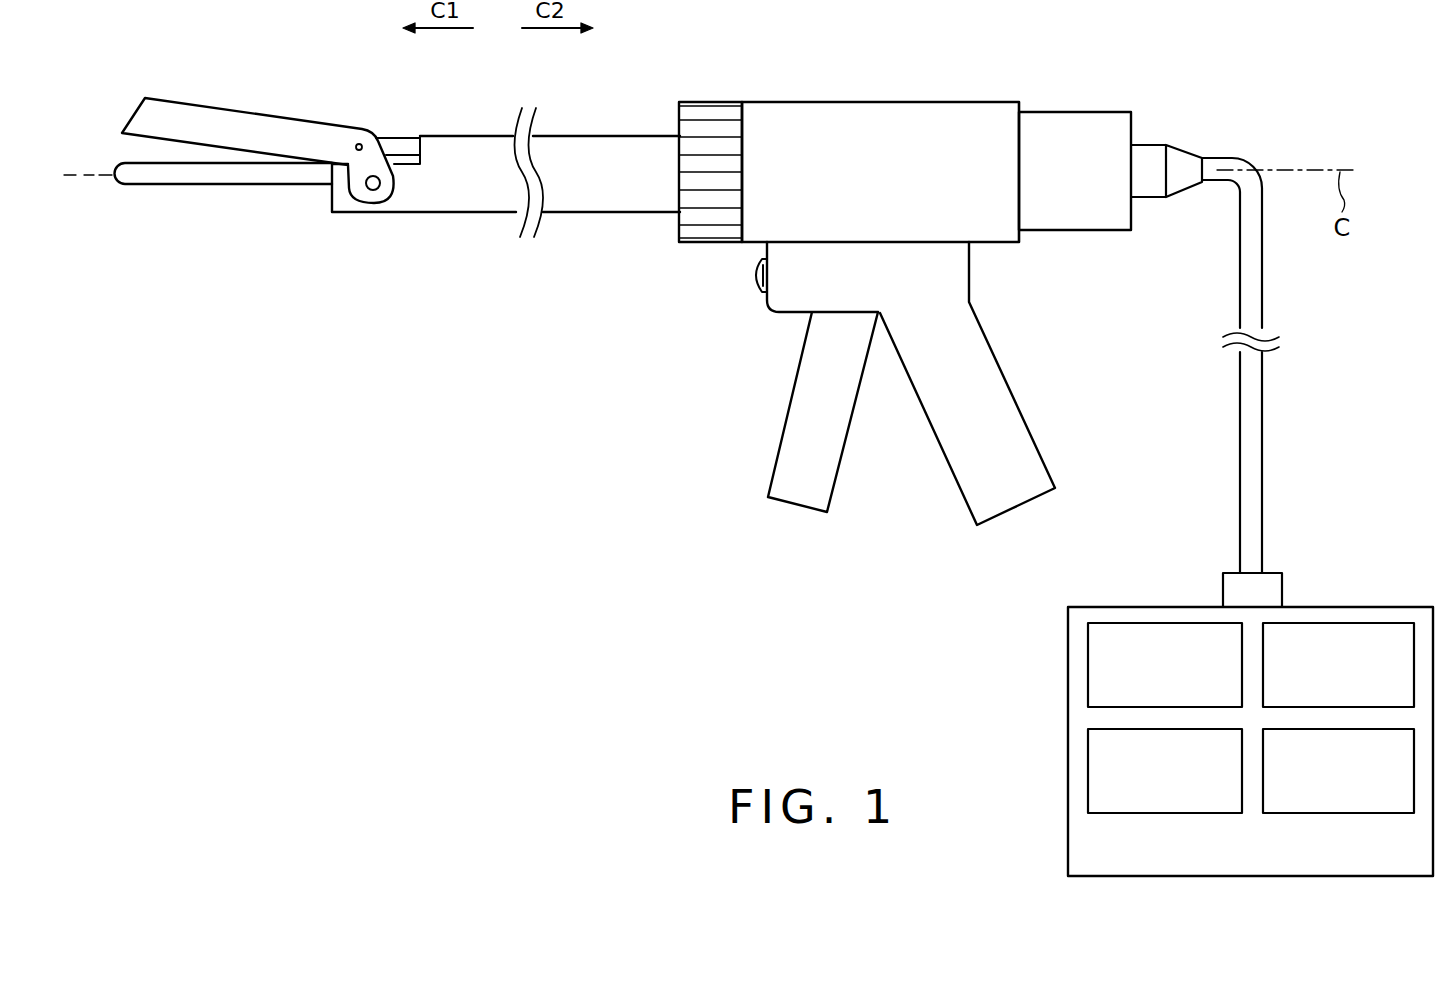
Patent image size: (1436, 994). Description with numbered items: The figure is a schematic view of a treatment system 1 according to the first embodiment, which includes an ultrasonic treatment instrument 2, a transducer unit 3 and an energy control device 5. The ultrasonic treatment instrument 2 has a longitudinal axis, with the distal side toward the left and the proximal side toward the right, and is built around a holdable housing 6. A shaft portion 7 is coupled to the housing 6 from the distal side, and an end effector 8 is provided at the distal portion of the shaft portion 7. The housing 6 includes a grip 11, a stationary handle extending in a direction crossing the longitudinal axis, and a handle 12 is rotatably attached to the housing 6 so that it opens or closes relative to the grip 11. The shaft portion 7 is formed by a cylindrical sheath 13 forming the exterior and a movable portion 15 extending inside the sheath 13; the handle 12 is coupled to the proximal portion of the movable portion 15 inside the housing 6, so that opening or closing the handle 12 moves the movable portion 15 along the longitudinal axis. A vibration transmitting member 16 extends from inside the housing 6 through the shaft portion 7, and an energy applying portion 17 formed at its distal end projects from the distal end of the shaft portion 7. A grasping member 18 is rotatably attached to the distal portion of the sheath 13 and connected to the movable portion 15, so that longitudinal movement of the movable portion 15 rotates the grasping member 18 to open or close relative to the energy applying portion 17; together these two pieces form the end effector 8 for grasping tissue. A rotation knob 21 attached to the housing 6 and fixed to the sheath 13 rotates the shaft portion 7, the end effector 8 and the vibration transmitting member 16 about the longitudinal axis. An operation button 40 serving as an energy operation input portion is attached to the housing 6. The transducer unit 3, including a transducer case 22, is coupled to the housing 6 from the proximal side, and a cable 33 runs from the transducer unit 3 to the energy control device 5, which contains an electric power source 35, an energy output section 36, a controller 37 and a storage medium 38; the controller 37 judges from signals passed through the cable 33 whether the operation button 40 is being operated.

The treatment system 1 is at (472, 467).
The ultrasonic treatment instrument 2 is at (832, 57).
The transducer unit 3 is at (1100, 96).
The energy control device 5 is at (1378, 590).
The housing 6 is at (890, 126).
The shaft portion 7 is at (573, 150).
The end effector 8 is at (273, 240).
The grip 11 is at (990, 393).
The handle 12 is at (807, 417).
The sheath 13 is at (593, 195).
The movable portion 15 is at (400, 147).
The vibration transmitting member 16 is at (309, 186).
The energy applying portion 17 is at (253, 178).
The grasping member 18 is at (162, 122).
The rotation knob 21 is at (710, 115).
The transducer case 22 is at (1073, 213).
The cable 33 is at (1252, 422).
The electric power source 35 is at (1088, 662).
The energy output section 36 is at (1333, 622).
The controller 37 is at (1088, 770).
The storage medium 38 is at (1338, 813).
The operation button 40 is at (750, 280).